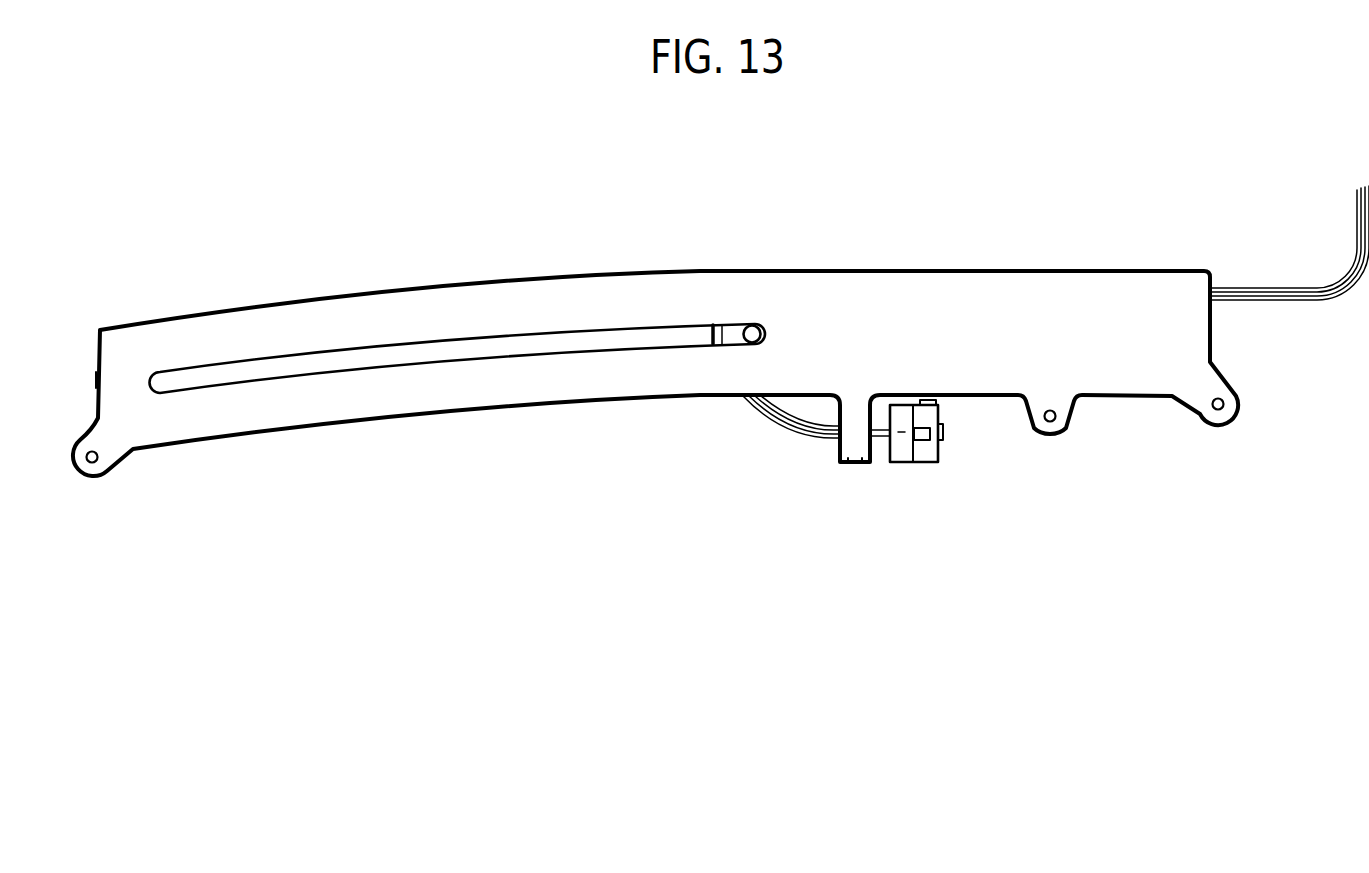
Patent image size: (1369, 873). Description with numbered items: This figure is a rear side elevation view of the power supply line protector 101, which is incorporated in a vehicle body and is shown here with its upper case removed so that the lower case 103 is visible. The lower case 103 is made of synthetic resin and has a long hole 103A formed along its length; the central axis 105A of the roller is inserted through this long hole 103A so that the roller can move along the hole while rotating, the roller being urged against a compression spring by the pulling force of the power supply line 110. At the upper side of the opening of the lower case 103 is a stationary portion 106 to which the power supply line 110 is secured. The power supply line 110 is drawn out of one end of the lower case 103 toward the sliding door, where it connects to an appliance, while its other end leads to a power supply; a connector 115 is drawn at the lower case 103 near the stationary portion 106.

The power supply line protector 101 is at (721, 360).
The lower case 103 is at (265, 402).
The long hole 103A is at (427, 347).
The central axis 105A is at (756, 325).
The stationary portion 106 is at (855, 446).
The power supply line 110 is at (1280, 302).
The connector 115 is at (925, 452).